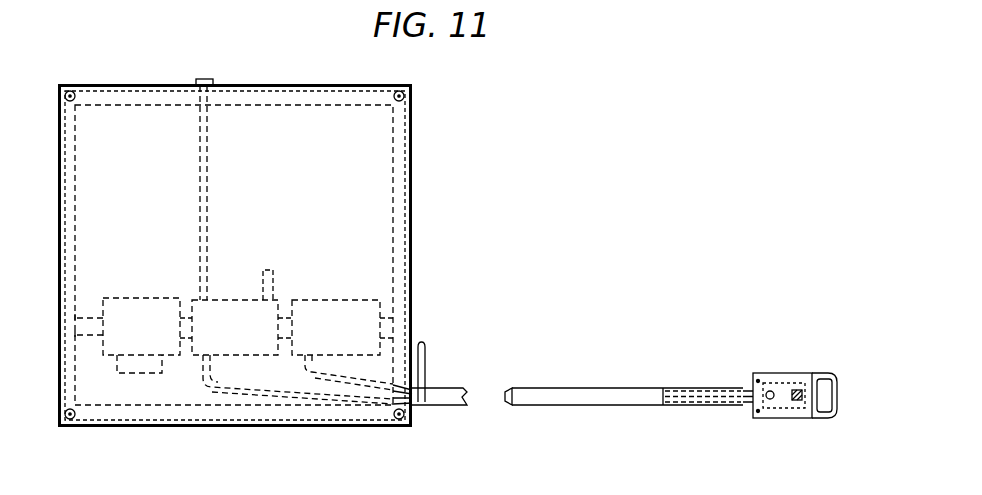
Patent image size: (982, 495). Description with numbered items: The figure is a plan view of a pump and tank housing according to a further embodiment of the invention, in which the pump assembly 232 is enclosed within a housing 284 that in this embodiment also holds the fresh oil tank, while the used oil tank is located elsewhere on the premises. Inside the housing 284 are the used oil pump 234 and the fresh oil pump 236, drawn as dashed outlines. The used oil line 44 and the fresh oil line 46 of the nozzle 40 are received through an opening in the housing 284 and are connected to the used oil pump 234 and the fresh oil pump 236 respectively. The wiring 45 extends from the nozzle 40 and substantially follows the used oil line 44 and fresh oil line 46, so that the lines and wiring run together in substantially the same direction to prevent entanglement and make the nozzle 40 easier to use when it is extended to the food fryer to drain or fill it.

The pump assembly 232 is at (489, 109).
The housing 284 is at (412, 236).
The used oil pump 234 is at (233, 300).
The fresh oil pump 236 is at (326, 300).
The used oil line 44 is at (250, 388).
The fresh oil line 46 is at (370, 388).
The wiring 45 is at (428, 370).
The nozzle 40 is at (784, 371).